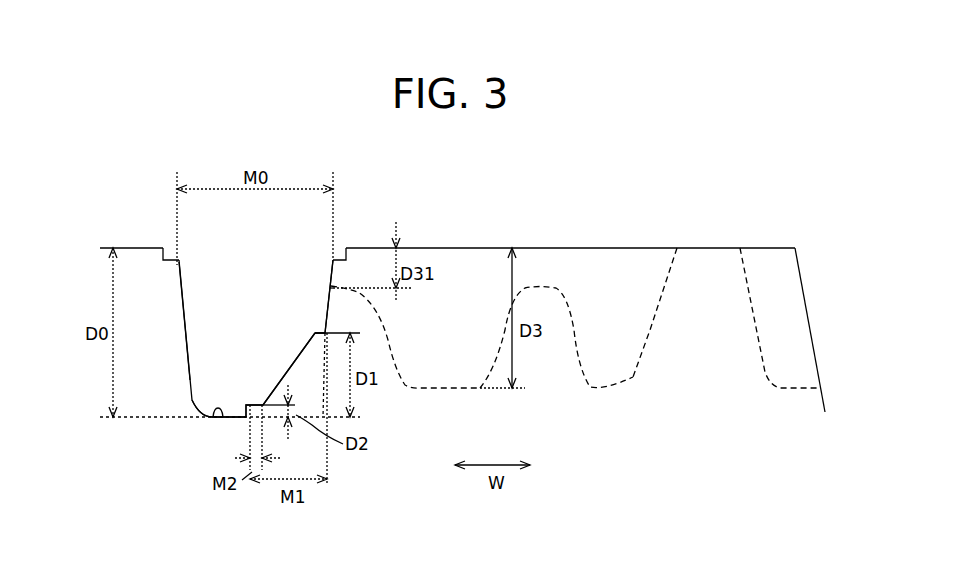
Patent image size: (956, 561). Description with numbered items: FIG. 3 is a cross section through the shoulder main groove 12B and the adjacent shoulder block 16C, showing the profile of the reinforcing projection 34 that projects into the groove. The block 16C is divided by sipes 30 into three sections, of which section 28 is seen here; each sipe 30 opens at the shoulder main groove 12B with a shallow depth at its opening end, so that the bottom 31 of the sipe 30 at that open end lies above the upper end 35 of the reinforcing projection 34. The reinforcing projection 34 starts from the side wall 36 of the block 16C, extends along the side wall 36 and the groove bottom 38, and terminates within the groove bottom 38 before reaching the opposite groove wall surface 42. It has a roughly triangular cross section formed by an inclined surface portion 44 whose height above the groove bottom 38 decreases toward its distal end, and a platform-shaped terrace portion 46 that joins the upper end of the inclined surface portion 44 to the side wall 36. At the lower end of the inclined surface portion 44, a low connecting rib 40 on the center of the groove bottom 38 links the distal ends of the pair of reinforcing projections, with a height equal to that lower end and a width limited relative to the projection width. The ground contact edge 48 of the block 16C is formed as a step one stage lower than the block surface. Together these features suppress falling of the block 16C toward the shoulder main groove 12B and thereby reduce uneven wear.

The shoulder main groove 12B is at (228, 285).
The block 16C is at (528, 248).
The section 28 is at (620, 248).
The sipe 30 is at (633, 378).
The bottom of the sipe 31 is at (324, 288).
The reinforcing projection 34 is at (273, 366).
The upper end of the reinforcing projection 35 is at (320, 330).
The side wall 36 is at (323, 306).
The groove bottom 38 is at (218, 418).
The connecting rib 40 is at (254, 400).
The groove wall surface 42 is at (183, 310).
The inclined surface portion 44 is at (300, 364).
The terrace portion 46 is at (324, 332).
The ground contact edge 48 is at (168, 250).